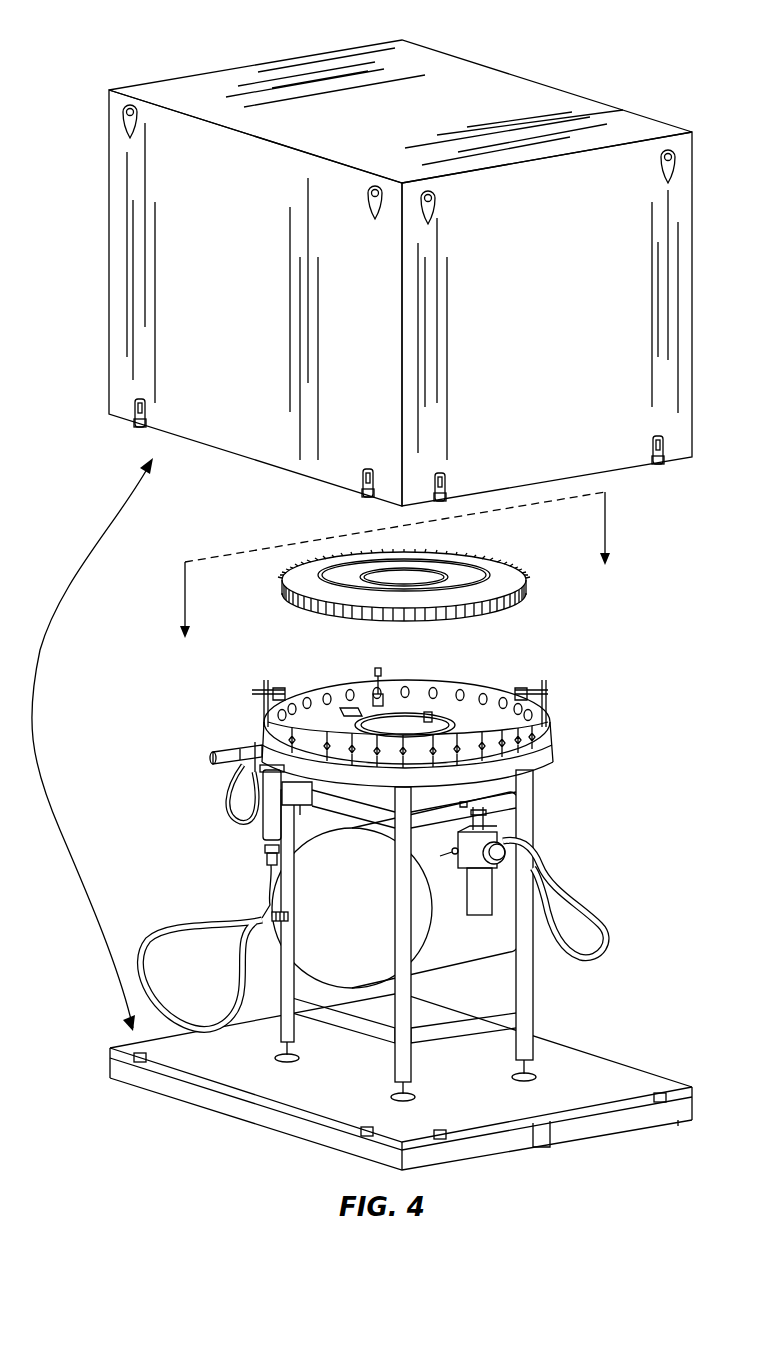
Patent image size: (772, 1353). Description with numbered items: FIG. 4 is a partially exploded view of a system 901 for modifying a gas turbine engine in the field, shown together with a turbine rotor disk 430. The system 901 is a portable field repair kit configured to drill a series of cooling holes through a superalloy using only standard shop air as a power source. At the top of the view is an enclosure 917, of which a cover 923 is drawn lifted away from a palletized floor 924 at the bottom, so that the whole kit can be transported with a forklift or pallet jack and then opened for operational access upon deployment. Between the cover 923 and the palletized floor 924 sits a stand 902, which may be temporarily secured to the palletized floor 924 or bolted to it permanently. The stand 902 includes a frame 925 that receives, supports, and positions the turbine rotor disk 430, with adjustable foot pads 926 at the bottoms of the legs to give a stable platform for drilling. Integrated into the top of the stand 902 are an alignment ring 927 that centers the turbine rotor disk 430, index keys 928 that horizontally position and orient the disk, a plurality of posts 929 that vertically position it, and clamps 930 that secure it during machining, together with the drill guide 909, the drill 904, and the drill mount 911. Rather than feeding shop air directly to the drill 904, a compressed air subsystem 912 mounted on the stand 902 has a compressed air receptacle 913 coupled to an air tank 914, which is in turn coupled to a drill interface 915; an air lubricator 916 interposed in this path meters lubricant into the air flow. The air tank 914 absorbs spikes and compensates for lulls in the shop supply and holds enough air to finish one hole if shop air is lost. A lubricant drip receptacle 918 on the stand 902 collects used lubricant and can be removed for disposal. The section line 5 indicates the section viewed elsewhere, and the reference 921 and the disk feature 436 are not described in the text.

The system 901 is at (93, 35).
The cover 923 is at (108, 252).
The enclosure 917 is at (84, 744).
The section line 5- 5 is at (394, 581).
The turbine rotor disk 430 is at (503, 573).
The disc hub rings 436 is at (450, 563).
The stand 902 is at (572, 724).
The drill guide 909 is at (486, 674).
The lower ring flange 921 is at (537, 765).
The alignment ring 927 is at (430, 714).
The index key 928 is at (346, 710).
The post 929 is at (382, 680).
The clamp 930 is at (552, 690).
The frame 925 is at (522, 822).
The adjustable foot pad 926 is at (530, 1075).
The palletized floor 924 is at (642, 1082).
The air tank 914 is at (305, 948).
The compressed air receptacle 913 is at (452, 853).
The air lubricator 916 is at (478, 912).
The drill 904 is at (207, 734).
The drill mount 911 is at (263, 718).
The lubricant drip receptacle 918 is at (253, 812).
The drill interface 915 is at (257, 857).
The compressed air subsystem 912 is at (191, 899).